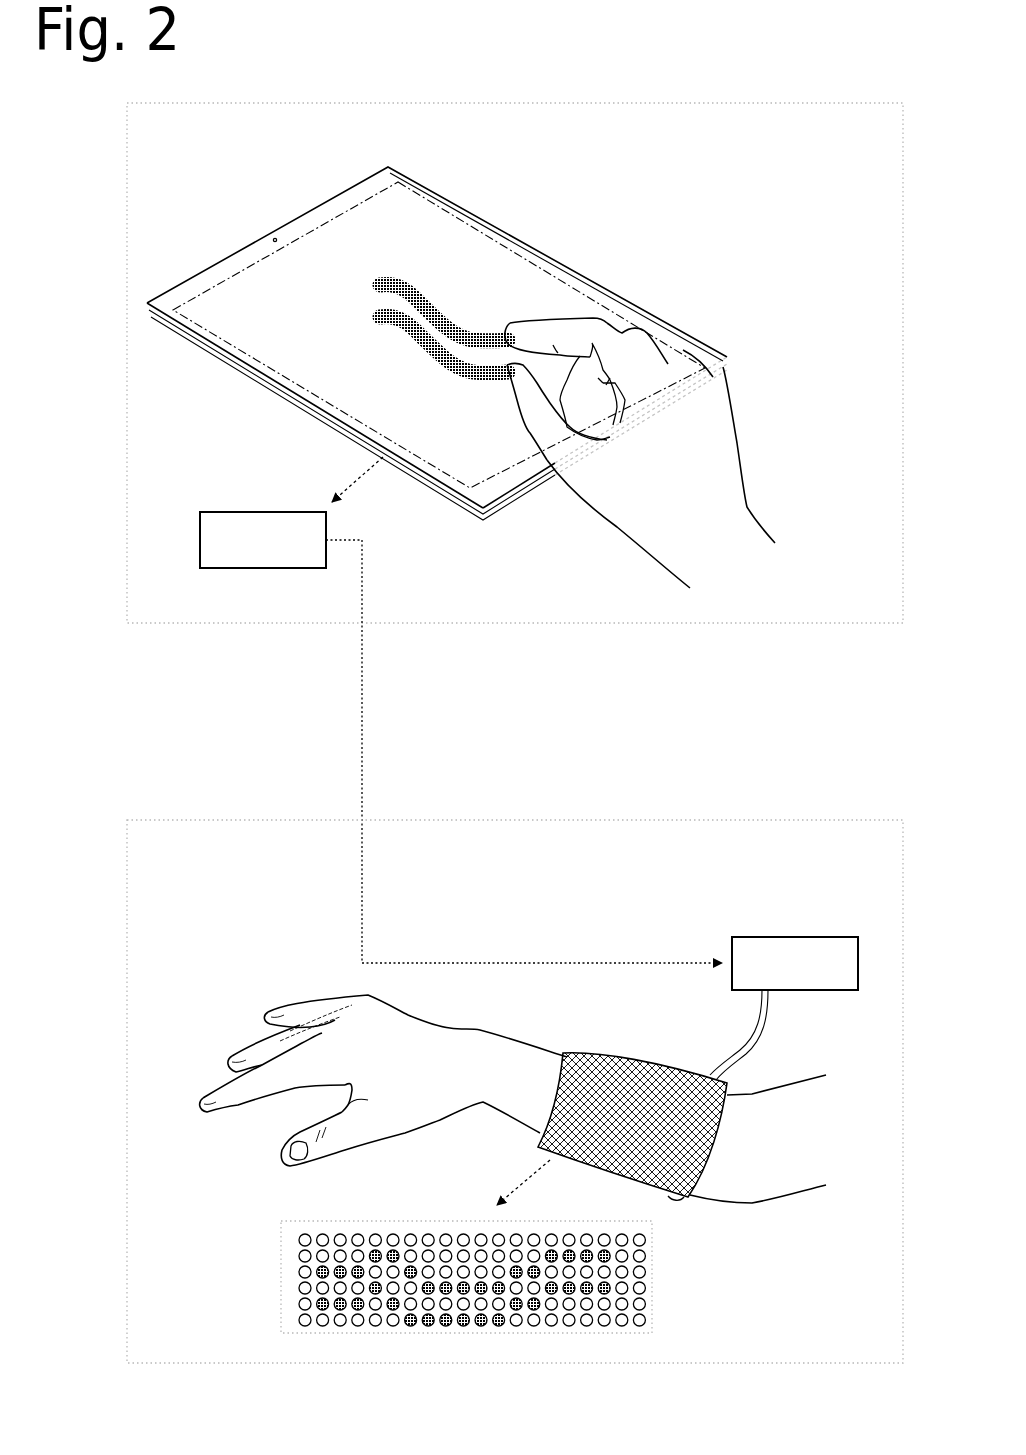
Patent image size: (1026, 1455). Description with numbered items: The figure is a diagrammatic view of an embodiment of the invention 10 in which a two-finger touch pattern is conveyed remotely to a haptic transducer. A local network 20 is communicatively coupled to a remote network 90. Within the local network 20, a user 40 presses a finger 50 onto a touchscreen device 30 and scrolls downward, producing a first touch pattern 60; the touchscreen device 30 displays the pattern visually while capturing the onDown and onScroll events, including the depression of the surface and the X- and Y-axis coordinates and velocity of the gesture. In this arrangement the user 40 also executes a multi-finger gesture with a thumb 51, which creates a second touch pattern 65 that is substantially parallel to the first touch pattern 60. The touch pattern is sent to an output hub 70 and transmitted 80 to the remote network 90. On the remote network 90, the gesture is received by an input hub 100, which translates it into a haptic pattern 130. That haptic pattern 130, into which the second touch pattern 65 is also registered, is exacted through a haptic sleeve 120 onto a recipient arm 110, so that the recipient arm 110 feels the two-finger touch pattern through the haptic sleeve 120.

The embodiment of the invention 10 is at (438, 52).
The local network 20 is at (565, 103).
The touchscreen device 30 is at (540, 248).
The user 40 is at (740, 427).
The finger 50 is at (510, 320).
The thumb 51 is at (507, 390).
The first touch pattern 60 is at (440, 308).
The second touch pattern 65 is at (397, 323).
The output hub 70 is at (220, 508).
The transmission 80 is at (410, 700).
The remote network 90 is at (647, 818).
The input hub 100 is at (783, 933).
The recipient arm 110 is at (518, 1048).
The haptic sleeve 120 is at (617, 1050).
The haptic pattern 130 is at (653, 1283).